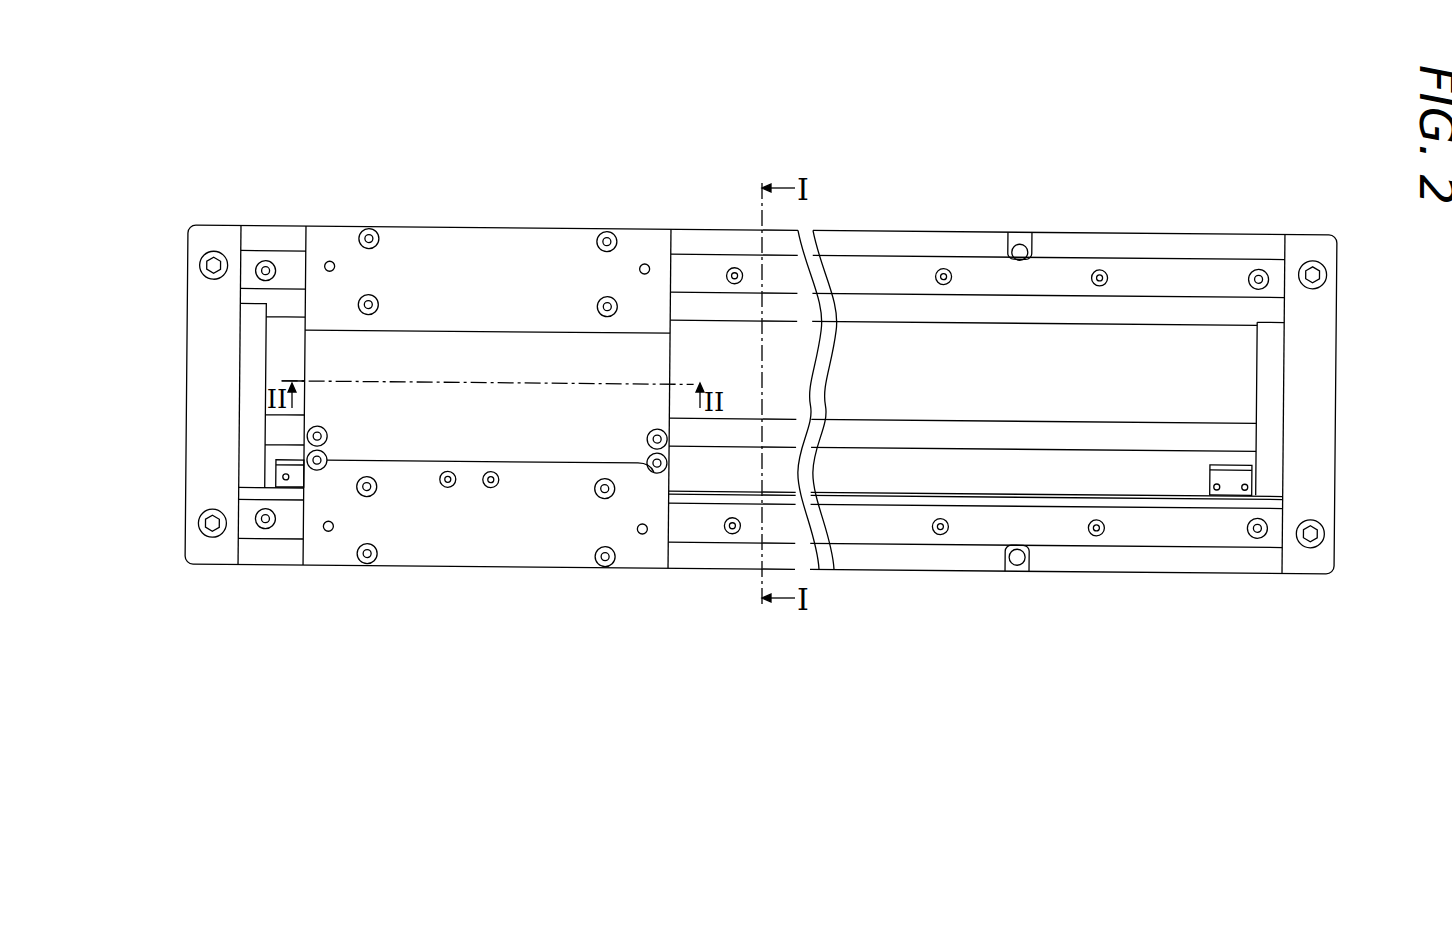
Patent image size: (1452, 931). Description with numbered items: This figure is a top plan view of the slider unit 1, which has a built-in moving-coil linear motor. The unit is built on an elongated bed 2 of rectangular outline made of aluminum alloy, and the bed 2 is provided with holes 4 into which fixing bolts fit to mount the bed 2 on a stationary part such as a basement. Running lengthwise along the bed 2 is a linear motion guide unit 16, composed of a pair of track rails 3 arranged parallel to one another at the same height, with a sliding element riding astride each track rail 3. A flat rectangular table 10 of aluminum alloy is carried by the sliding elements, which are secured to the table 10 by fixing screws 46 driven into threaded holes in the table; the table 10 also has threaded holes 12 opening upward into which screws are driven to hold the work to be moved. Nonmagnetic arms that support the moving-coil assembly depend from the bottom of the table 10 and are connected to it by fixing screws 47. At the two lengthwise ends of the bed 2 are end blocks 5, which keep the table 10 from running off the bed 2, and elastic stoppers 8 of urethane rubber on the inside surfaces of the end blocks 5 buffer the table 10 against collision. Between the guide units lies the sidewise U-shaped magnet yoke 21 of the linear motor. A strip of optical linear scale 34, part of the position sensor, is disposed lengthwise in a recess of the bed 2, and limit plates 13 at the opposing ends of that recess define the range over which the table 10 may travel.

The slider unit 1 is at (1102, 198).
The bed 2 is at (973, 242).
The track rail 3 is at (900, 273).
The hole 4 is at (1023, 240).
The end block 5 is at (203, 493).
The stopper 8 is at (252, 360).
The table 10 is at (483, 533).
The threaded hole 12 is at (648, 262).
The limit plate 13 is at (295, 480).
The linear motion guide unit 16 is at (492, 217).
The magnet yoke 21 is at (1097, 363).
The optical linear scale 34 is at (1028, 490).
The fixing screw 46 is at (372, 297).
The fixing screw 47 is at (308, 457).